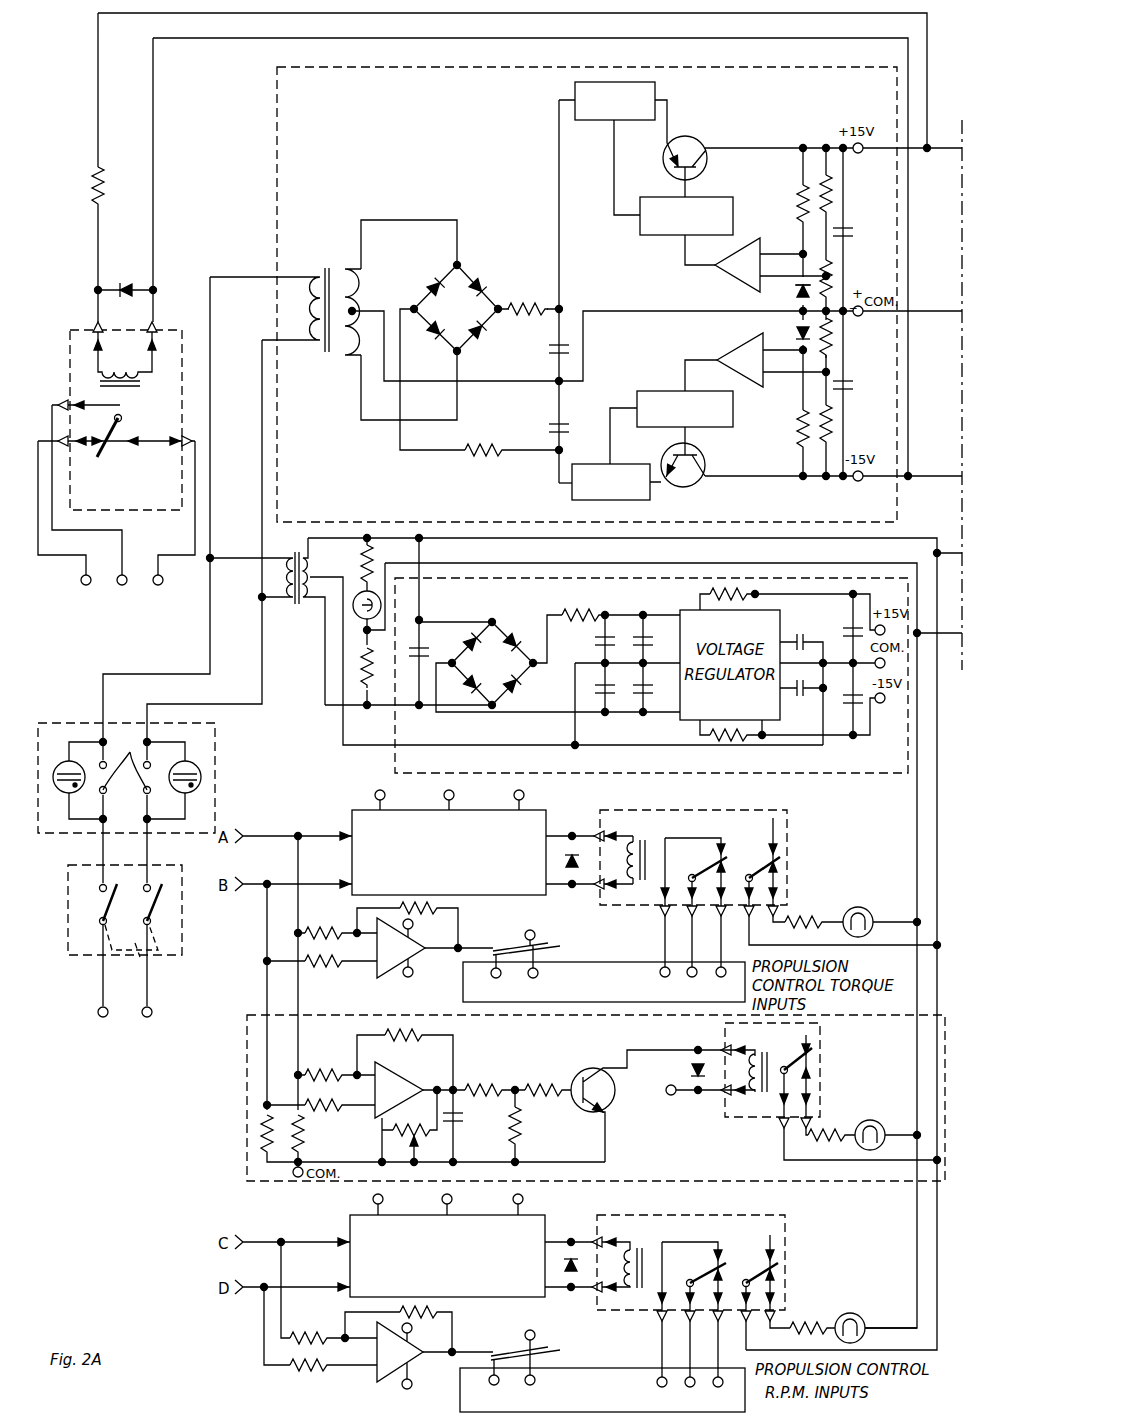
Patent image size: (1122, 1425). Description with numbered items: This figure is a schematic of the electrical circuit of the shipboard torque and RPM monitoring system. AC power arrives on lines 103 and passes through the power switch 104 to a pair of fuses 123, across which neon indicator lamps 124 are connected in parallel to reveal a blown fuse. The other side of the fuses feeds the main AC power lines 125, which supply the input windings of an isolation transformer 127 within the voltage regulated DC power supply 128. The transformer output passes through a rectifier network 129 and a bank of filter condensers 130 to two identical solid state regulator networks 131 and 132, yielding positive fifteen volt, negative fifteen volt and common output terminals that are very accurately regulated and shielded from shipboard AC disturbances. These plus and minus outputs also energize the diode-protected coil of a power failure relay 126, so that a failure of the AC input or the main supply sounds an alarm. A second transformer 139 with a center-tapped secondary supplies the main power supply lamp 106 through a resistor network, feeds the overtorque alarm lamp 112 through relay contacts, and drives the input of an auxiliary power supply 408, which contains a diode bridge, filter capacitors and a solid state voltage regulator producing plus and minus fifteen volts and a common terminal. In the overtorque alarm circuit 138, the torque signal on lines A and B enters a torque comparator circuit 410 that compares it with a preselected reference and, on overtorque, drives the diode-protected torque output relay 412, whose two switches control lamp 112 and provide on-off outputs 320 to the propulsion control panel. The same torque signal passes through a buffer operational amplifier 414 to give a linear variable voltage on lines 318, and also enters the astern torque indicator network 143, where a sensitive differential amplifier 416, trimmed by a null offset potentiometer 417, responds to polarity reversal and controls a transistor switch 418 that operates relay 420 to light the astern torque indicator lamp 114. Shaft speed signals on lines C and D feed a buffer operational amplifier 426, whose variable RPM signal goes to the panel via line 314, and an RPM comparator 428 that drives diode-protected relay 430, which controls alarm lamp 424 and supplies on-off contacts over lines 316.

The lines 103 is at (102, 980).
The power switch 104 is at (182, 930).
The main power supply lamp 106 is at (357, 612).
The overtorque alarm lamp 112 is at (866, 908).
The astern torque indicator lamp 114 is at (878, 1121).
The fuses 123 is at (130, 752).
The neon indicator lamps 124 is at (63, 764).
The main AC power lines 125 is at (262, 646).
The power failure relay 126 is at (70, 330).
The isolation transformer 127 is at (326, 272).
The voltage regulated DC power supply 128 is at (277, 133).
The rectifier network 129 is at (466, 290).
The bank of filter condensers 130 is at (562, 330).
The solid state regulator network 131 is at (660, 254).
The solid state regulator network 132 is at (664, 364).
The overtorque alarm circuit 138 is at (345, 817).
The transformer 139 is at (294, 603).
The astern torque indicator network 143 is at (240, 1140).
The line 314 is at (560, 1352).
The lines 316 is at (660, 1350).
The lines 318 is at (560, 950).
The on-off outputs 320 is at (660, 930).
The auxiliary power supply 408 is at (388, 756).
The torque comparator circuit 410 is at (552, 818).
The torque output relay 412 is at (787, 840).
The buffer operational amplifier 414 is at (380, 968).
The differential amplifier 416 is at (375, 1108).
The null offset potentiometer 417 is at (422, 1138).
The transistor switch 418 is at (584, 1072).
The relay 420 is at (820, 1082).
The alarm lamp 424 is at (853, 1313).
The buffer operational amplifier 426 is at (380, 1372).
The RPM comparator 428 is at (345, 1229).
The relay 430 is at (785, 1242).